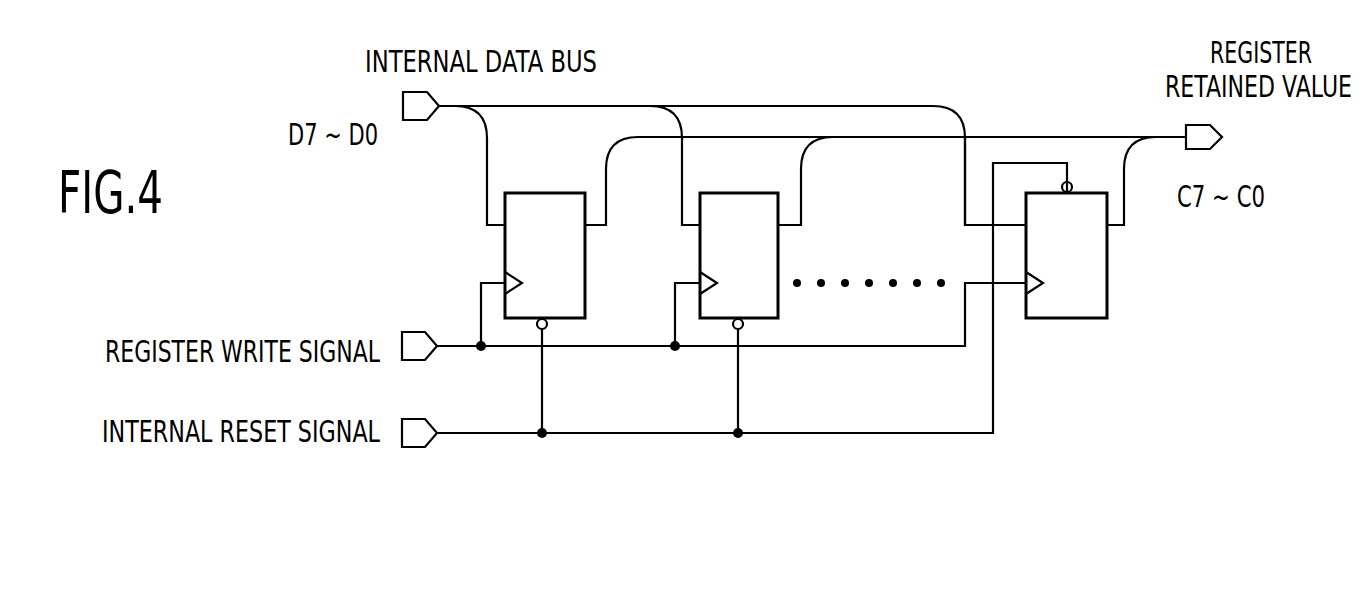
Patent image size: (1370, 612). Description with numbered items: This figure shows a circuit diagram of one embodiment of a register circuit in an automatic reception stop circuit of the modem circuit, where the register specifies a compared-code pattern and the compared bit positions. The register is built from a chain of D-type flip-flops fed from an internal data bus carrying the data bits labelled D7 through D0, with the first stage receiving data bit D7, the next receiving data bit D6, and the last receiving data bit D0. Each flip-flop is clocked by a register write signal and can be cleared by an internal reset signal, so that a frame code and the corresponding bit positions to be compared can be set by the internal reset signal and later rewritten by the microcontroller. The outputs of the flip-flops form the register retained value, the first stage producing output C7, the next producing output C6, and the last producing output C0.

The data bus bit 7 input to flip-flop D7 is at (475, 165).
The flip-flop output bit 7 of register retained value C7 is at (571, 227).
The data bus bit 6 input to flip-flop D6 is at (668, 165).
The flip-flop output bit 6 of register retained value C6 is at (766, 227).
The data bus bit 0 input to flip-flop D0 is at (977, 181).
The flip-flop output bit 0 of register retained value C0 is at (1091, 227).